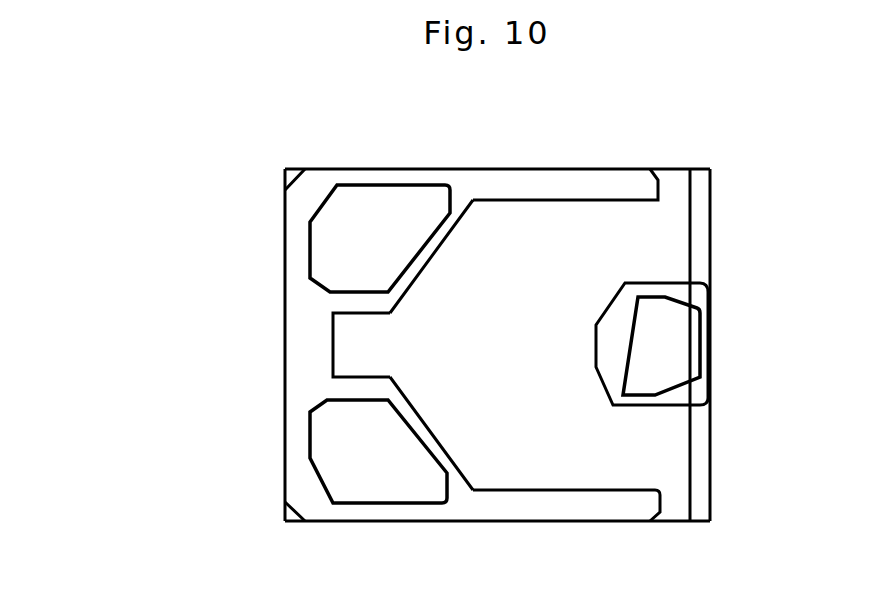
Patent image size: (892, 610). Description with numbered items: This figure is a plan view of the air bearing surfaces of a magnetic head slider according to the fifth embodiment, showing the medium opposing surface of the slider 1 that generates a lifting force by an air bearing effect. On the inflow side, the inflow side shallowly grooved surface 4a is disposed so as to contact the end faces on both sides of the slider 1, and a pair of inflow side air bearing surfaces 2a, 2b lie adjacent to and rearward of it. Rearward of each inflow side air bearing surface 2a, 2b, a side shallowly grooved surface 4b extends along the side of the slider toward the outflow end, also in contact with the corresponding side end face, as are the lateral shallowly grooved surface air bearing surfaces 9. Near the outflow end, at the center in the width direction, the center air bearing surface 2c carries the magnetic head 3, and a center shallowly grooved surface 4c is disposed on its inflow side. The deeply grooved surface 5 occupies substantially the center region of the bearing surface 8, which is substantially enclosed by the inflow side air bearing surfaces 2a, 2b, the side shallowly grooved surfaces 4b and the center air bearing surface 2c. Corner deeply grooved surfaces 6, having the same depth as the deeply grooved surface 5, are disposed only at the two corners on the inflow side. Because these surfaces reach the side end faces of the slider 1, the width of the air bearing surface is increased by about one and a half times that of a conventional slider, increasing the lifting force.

The slider 1 is at (285, 345).
The inflow side air bearing surface 2a is at (352, 237).
The inflow side air bearing surface 2b is at (362, 458).
The center air bearing surface 2c is at (662, 345).
The magnetic head 3 is at (700, 353).
The inflow side shallowly grooved surface 4a is at (305, 313).
The side shallowly grooved surface 4b is at (530, 503).
The center shallowly grooved surface 4c is at (617, 330).
The deeply grooved surface 5 is at (547, 305).
The corner deeply grooved surface 6 is at (290, 170).
The bearing surface 8 is at (453, 178).
The lateral shallowly grooved surface air bearing surface 9 is at (368, 168).